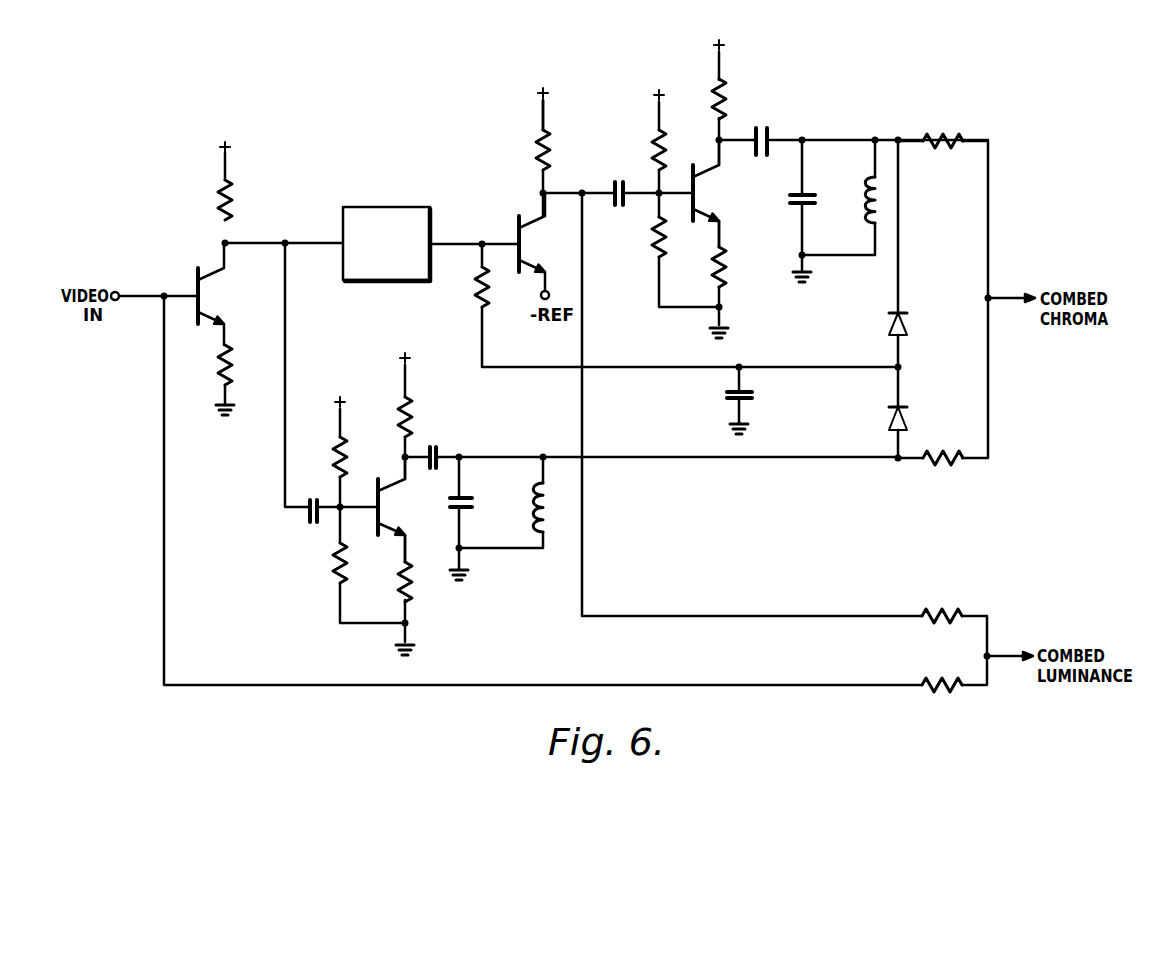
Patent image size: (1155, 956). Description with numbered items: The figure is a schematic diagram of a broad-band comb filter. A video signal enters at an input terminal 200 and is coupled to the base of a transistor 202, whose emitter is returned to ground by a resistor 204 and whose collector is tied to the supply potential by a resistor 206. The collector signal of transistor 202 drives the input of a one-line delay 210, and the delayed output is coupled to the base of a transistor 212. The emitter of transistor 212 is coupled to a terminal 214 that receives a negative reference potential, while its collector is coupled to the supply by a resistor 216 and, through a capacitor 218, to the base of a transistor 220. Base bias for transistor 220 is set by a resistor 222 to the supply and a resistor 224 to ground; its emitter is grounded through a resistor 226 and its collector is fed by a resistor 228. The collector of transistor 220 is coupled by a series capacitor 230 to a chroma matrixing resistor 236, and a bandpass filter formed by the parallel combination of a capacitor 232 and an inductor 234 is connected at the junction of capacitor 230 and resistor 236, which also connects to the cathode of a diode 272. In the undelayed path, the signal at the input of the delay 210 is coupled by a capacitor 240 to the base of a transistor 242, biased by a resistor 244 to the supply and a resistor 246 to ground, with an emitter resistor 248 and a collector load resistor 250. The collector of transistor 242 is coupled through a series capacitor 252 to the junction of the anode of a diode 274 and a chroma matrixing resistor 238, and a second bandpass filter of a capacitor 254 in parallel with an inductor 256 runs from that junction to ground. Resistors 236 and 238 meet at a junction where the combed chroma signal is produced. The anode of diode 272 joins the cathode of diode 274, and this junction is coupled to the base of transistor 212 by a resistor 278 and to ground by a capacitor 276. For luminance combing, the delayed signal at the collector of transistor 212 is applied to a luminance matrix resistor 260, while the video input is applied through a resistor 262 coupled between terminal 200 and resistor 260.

The input terminal 200 is at (118, 290).
The transistor 202 is at (216, 297).
The resistor 204 is at (232, 366).
The resistor 206 is at (212, 205).
The 1-H delay 210 is at (396, 185).
The transistor 212 is at (528, 258).
The terminal 214 is at (539, 288).
The resistor 216 is at (531, 151).
The capacitor 218 is at (611, 185).
The transistor 220 is at (703, 202).
The resistor 222 is at (650, 150).
The resistor 224 is at (650, 244).
The resistor 226 is at (715, 269).
The resistor 228 is at (733, 96).
The series capacitor 230 is at (770, 135).
The capacitor 232 is at (807, 192).
The inductor 234 is at (861, 213).
The chroma matrixing resistor 236 is at (939, 130).
The chroma matrixing resistor 238 is at (942, 466).
The capacitor 240 is at (305, 521).
The transistor 242 is at (393, 508).
The resistor 244 is at (330, 456).
The resistor 246 is at (330, 566).
The resistor 248 is at (415, 591).
The resistor 250 is at (420, 410).
The series capacitor 252 is at (441, 446).
The capacitor 254 is at (466, 497).
The inductor 256 is at (530, 519).
The luminance matrix resistor 260 is at (935, 607).
The resistor 262 is at (935, 676).
The diode 272 is at (885, 323).
The diode 274 is at (885, 422).
The capacitor 276 is at (725, 400).
The resistor 278 is at (469, 296).